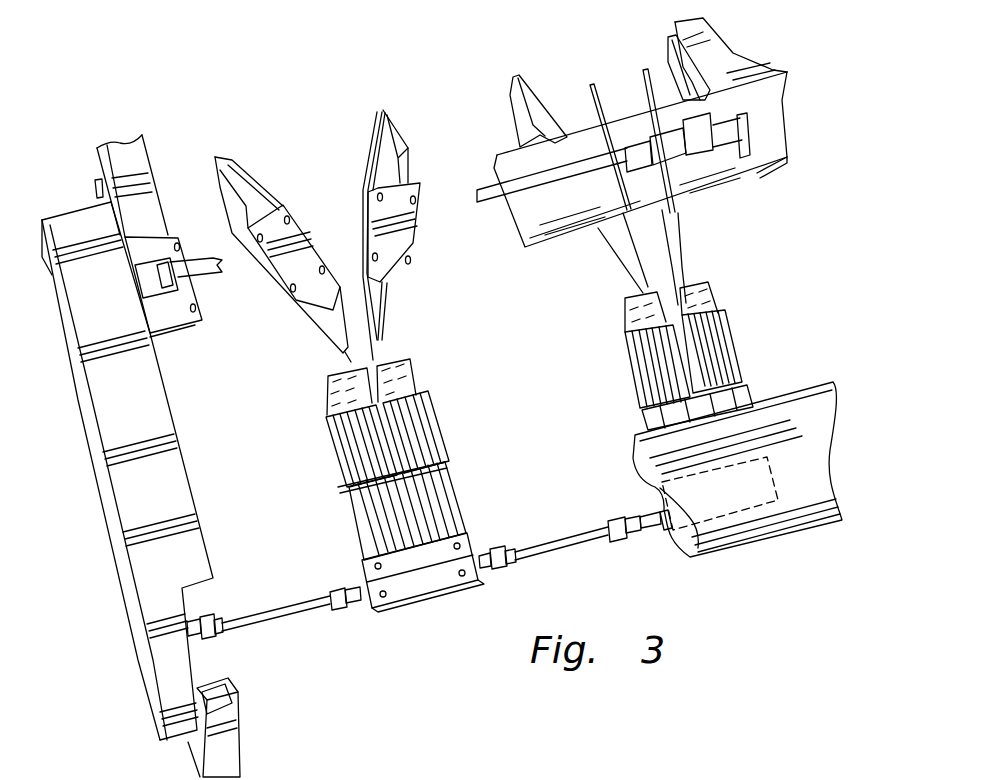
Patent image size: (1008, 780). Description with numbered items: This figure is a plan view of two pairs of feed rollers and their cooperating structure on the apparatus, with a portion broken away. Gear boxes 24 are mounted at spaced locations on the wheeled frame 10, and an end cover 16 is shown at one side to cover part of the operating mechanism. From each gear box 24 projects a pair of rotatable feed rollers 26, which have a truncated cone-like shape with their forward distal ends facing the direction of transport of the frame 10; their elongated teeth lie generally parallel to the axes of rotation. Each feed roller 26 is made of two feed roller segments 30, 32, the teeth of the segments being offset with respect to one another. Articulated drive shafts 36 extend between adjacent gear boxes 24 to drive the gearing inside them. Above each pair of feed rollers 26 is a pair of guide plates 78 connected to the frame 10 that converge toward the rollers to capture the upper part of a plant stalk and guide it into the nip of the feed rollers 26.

The wheeled frame 10 is at (787, 420).
The end cover 16 is at (150, 518).
The gear box 24 is at (408, 585).
The feed roller 26 is at (328, 442).
The feed roller segment 30 is at (417, 447).
The feed roller segment 32 is at (442, 500).
The articulated drive shaft 36 is at (276, 612).
The guide plate 78 is at (328, 325).